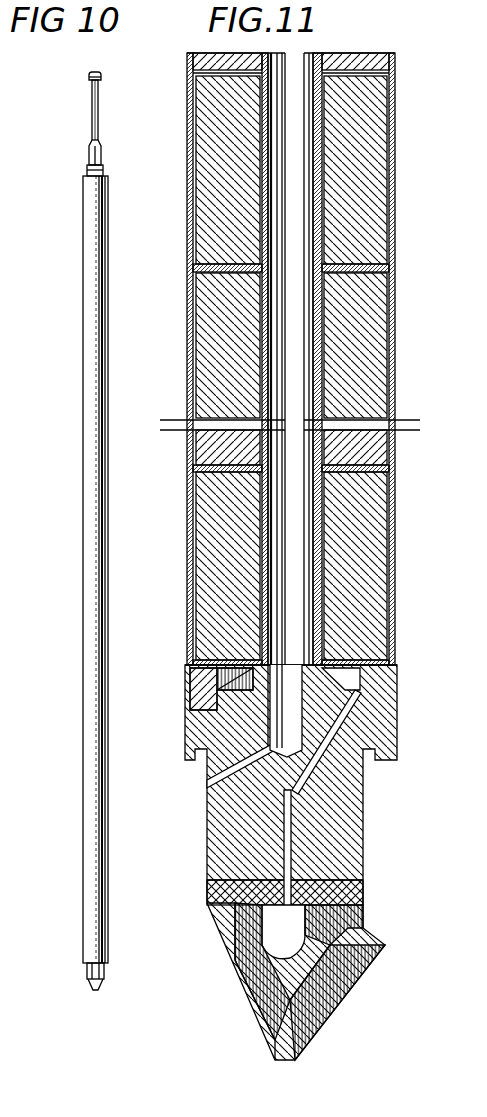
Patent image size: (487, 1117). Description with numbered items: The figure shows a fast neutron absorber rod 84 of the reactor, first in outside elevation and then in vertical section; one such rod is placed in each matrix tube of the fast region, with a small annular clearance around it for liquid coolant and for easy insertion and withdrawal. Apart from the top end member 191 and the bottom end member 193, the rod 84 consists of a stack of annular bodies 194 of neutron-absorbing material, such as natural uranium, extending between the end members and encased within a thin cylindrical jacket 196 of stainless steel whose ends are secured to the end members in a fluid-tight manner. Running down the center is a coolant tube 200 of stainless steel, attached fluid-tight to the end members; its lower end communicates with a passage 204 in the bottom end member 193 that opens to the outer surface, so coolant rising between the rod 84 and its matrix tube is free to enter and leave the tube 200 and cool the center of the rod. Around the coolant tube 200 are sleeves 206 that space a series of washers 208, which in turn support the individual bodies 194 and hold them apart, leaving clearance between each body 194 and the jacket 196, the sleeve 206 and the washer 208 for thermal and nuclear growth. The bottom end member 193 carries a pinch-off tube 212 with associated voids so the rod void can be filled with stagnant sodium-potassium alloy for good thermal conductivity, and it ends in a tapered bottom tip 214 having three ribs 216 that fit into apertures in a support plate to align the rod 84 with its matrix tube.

In FIG. 10, the fast rod 84 is at (82, 414).
In FIG. 11, the fast rod 84 is at (403, 276).
In FIG. 10, the top end member 191 is at (90, 173).
In FIG. 11, the bottom end member 193 is at (222, 812).
In FIG. 11, the annular bodies 194 is at (383, 219).
In FIG. 11, the cylindrical jacket 196 is at (189, 497).
In FIG. 11, the central coolant tube 200 is at (313, 128).
In FIG. 11, the passage 204 is at (282, 717).
In FIG. 11, the sleeves 206 is at (262, 122).
In FIG. 11, the washers 208 is at (218, 262).
In FIG. 11, the pinch-off tube 212 is at (282, 902).
In FIG. 11, the tapered bottom tip 214 is at (355, 905).
In FIG. 10, the ribs 216 is at (88, 983).
In FIG. 11, the ribs 216 is at (262, 1012).